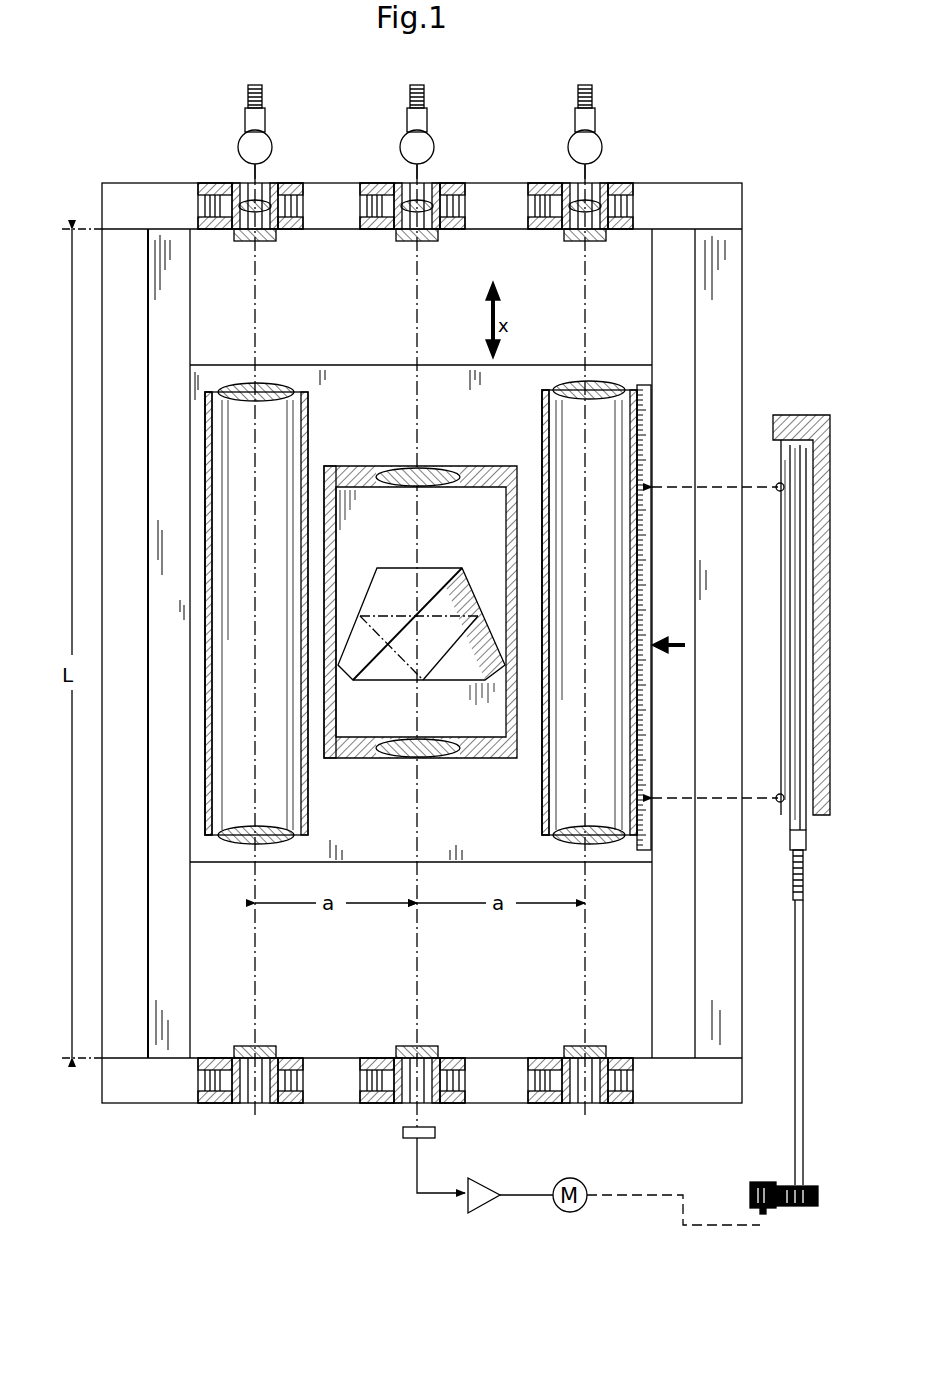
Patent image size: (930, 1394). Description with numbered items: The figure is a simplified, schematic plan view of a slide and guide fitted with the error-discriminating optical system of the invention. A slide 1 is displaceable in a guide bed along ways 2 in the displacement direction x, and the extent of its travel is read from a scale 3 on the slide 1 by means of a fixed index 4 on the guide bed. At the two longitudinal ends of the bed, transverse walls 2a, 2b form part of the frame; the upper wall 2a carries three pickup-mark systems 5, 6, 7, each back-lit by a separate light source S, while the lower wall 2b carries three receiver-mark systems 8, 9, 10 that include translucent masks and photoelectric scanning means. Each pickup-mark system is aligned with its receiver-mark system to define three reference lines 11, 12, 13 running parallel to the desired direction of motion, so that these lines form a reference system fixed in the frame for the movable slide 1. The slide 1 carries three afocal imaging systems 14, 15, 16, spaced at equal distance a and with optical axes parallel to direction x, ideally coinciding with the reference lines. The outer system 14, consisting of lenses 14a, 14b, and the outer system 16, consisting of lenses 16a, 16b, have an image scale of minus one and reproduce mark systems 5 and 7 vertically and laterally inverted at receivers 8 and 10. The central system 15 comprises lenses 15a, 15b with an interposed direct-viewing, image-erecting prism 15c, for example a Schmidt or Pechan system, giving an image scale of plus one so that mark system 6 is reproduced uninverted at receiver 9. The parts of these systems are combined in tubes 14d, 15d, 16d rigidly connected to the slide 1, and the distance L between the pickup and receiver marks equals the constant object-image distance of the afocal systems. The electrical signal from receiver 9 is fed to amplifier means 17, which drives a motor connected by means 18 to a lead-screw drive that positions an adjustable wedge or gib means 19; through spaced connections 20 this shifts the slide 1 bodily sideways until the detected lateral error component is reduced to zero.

The slide 1 is at (362, 373).
The ways 2 is at (190, 965).
The transverse member or wall 2a is at (680, 195).
The transverse member or wall 2b is at (665, 1090).
The scale 3 is at (652, 568).
The fixed index 4 is at (677, 633).
The pickup-mark system 5 is at (238, 243).
The pickup-mark system 6 is at (398, 243).
The pickup-mark system 7 is at (562, 243).
The receiver-mark system 8 is at (270, 1046).
The receiver-mark system 9 is at (432, 1046).
The receiver-mark system 10 is at (598, 1046).
The reference line 11 is at (256, 310).
The reference line 12 is at (418, 300).
The reference line 13 is at (586, 300).
The afocal imaging system 14 is at (207, 515).
The lens 14a is at (268, 380).
The lens 14b is at (238, 848).
The tube 14d is at (208, 613).
The afocal imaging system 15 is at (436, 520).
The lens 15a is at (403, 470).
The lens 15b is at (432, 755).
The direct-viewing image-erecting prism 15c is at (452, 575).
The tube 15d is at (344, 470).
The afocal imaging system 16 is at (570, 468).
The lens 16a is at (598, 378).
The lens 16b is at (608, 848).
The tube 16d is at (545, 430).
The amplifier means 17 is at (488, 1183).
The connecting means 18 is at (810, 1180).
The adjustable wedge or gib means 19 is at (812, 628).
The spaced connections 20 is at (752, 485).
The light source S is at (258, 130).